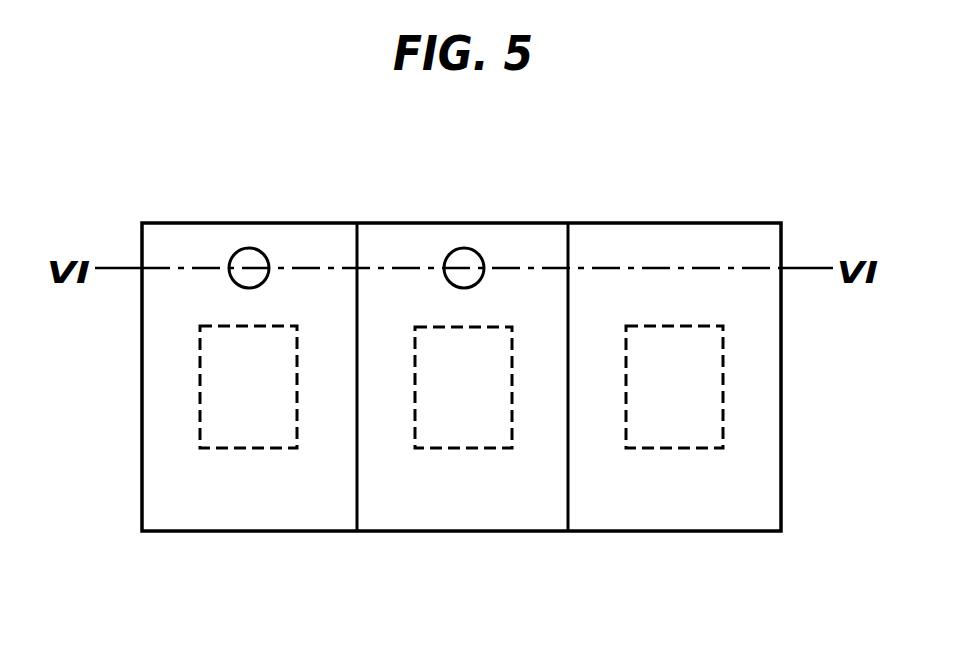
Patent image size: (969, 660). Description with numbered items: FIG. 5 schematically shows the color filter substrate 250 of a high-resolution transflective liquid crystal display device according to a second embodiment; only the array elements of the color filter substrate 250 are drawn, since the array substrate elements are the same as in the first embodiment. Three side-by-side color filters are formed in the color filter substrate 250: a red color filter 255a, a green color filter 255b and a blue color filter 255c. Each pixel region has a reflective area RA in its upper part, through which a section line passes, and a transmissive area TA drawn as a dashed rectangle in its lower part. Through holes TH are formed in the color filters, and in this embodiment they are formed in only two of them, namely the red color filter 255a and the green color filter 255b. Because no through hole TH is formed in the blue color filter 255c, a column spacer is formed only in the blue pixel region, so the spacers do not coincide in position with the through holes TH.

The color filter substrate 250 is at (500, 186).
The through hole TH is at (250, 248).
The transmissive area TA is at (268, 385).
The reflective area RA is at (333, 301).
The red color filter 255a is at (295, 508).
The green color filter 255b is at (528, 502).
The blue color filter 255c is at (752, 502).